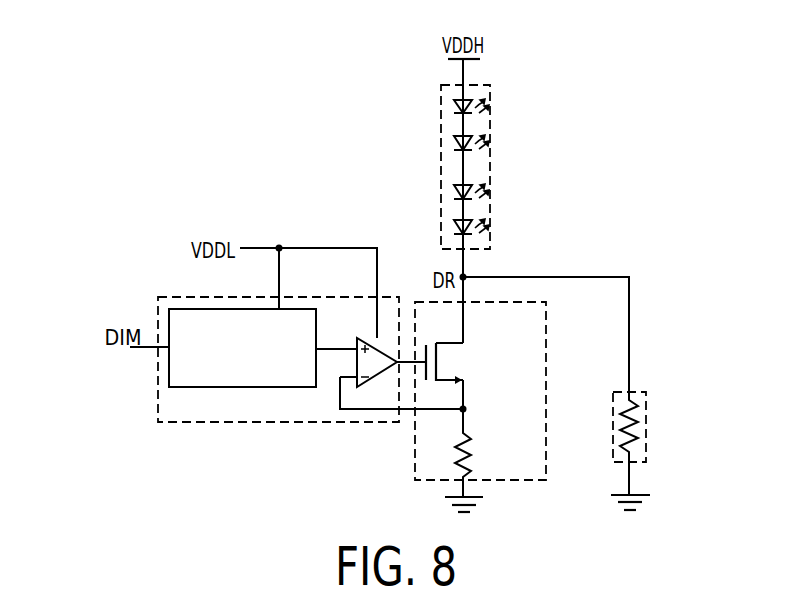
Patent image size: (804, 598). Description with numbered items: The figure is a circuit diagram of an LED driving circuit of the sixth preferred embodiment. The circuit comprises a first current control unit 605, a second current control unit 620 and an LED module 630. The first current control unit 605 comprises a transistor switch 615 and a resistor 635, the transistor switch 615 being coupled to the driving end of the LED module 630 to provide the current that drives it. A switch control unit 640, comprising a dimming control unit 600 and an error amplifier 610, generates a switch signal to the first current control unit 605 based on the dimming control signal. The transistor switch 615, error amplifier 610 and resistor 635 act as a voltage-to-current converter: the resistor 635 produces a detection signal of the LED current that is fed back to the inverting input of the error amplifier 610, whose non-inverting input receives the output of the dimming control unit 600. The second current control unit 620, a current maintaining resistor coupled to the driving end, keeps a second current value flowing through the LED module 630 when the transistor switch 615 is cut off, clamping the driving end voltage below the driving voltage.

The dimming control unit 600 is at (172, 373).
The first current control unit 605 is at (546, 340).
The error amplifier 610 is at (368, 343).
The transistor switch 615 is at (472, 364).
The second current control unit 620 is at (613, 398).
The LED module 630 is at (441, 150).
The resistor 635 is at (470, 455).
The switch control unit 640 is at (318, 422).